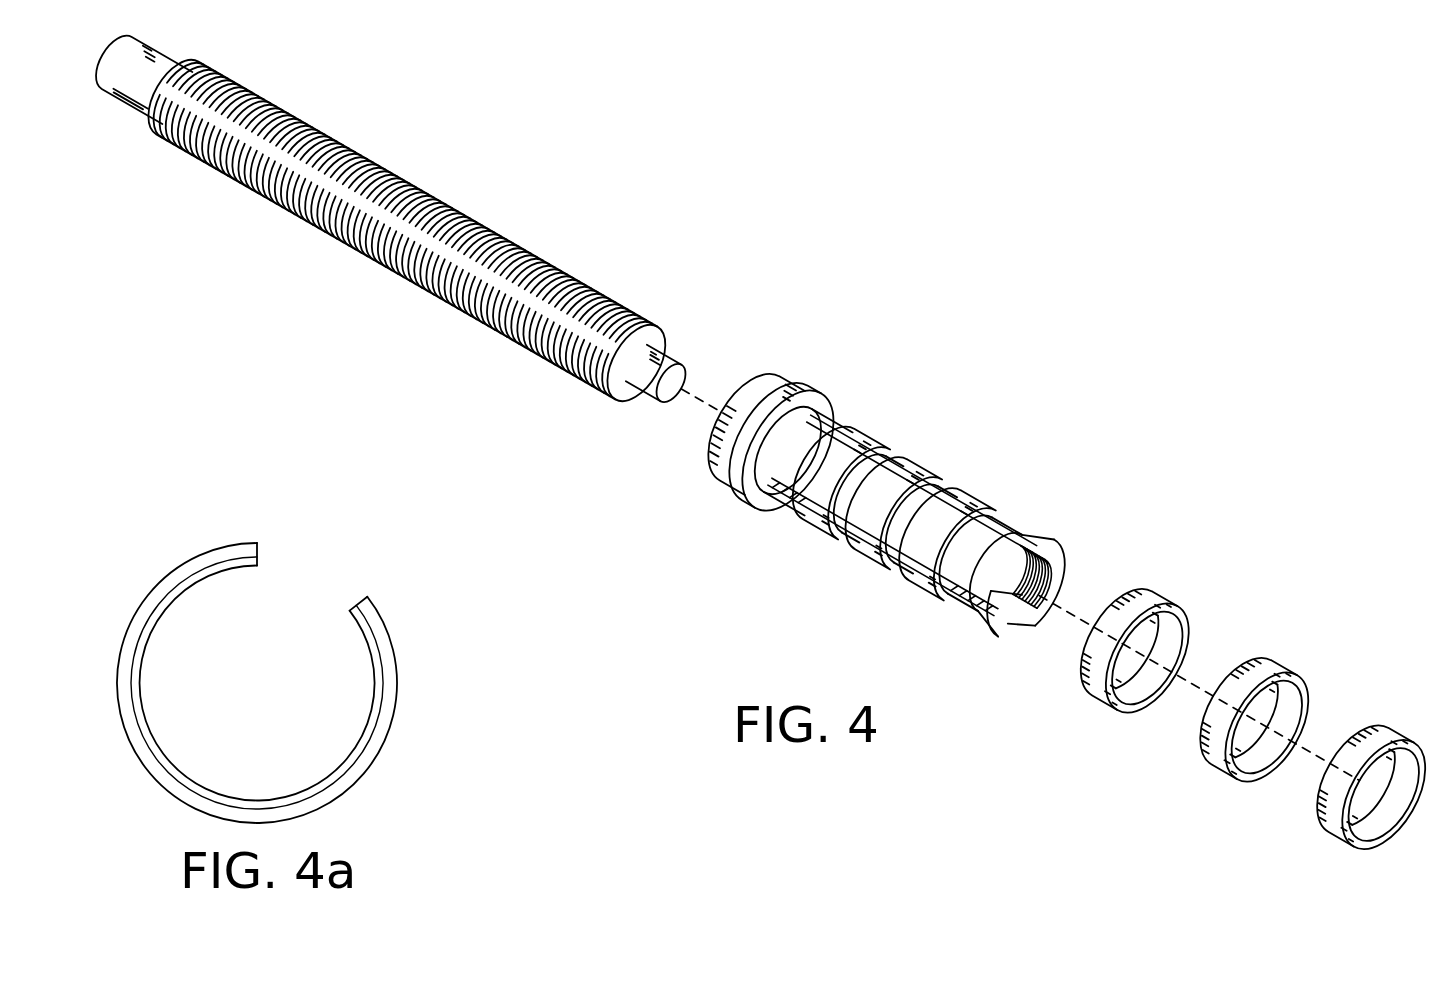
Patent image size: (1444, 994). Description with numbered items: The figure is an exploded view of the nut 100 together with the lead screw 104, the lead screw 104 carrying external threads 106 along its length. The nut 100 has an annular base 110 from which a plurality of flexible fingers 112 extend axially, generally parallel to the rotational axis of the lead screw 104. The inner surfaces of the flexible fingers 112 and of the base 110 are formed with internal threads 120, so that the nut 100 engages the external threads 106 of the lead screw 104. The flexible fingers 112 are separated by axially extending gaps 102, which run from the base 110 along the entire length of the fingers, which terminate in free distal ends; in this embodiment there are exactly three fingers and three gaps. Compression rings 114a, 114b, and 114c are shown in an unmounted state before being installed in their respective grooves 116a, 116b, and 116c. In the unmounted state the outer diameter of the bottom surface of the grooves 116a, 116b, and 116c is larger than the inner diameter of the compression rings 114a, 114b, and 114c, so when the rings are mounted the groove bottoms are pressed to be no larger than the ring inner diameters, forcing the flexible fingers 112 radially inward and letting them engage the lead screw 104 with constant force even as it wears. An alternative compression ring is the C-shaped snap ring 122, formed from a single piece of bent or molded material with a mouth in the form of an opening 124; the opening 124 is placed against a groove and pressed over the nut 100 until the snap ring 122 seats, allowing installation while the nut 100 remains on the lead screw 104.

In FIG. 4, the nut 100 is at (1056, 386).
In FIG. 4, the axially extending gaps 102 is at (1050, 502).
In FIG. 4, the lead screw 104 is at (125, 105).
In FIG. 4, the external threads 106 is at (562, 270).
In FIG. 4, the annular base 110 is at (822, 385).
In FIG. 4, the flexible fingers 112 is at (1050, 560).
In FIG. 4, the compression ring 114a is at (1105, 712).
In FIG. 4, the compression ring 114b is at (1220, 775).
In FIG. 4, the compression ring 114c is at (1335, 838).
In FIG. 4, the groove 116a is at (860, 470).
In FIG. 4, the groove 116b is at (920, 498).
In FIG. 4, the groove 116c is at (988, 528).
In FIG. 4, the internal threads 120 is at (1048, 562).
In FIG. 4a, the snap ring 122 is at (152, 600).
In FIG. 4a, the opening 124 is at (370, 592).